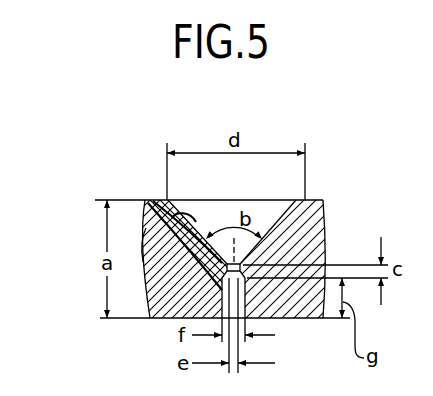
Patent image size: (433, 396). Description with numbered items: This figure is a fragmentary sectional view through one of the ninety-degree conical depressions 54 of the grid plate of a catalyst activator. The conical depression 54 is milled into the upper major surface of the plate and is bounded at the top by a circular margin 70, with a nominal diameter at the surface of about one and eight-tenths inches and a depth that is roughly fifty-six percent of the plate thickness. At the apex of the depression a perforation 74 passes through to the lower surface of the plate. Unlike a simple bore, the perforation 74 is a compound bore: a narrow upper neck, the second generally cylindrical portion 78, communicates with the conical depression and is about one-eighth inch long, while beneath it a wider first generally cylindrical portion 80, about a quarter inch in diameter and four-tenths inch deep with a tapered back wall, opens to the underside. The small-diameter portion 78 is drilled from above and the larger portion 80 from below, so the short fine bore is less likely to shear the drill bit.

The 90° conical depression 54 is at (166, 198).
The circular margin 70 is at (168, 197).
The perforation 74 is at (150, 205).
The second generally cylindrical portion 78 is at (152, 200).
The first generally cylindrical portion 80 is at (143, 240).